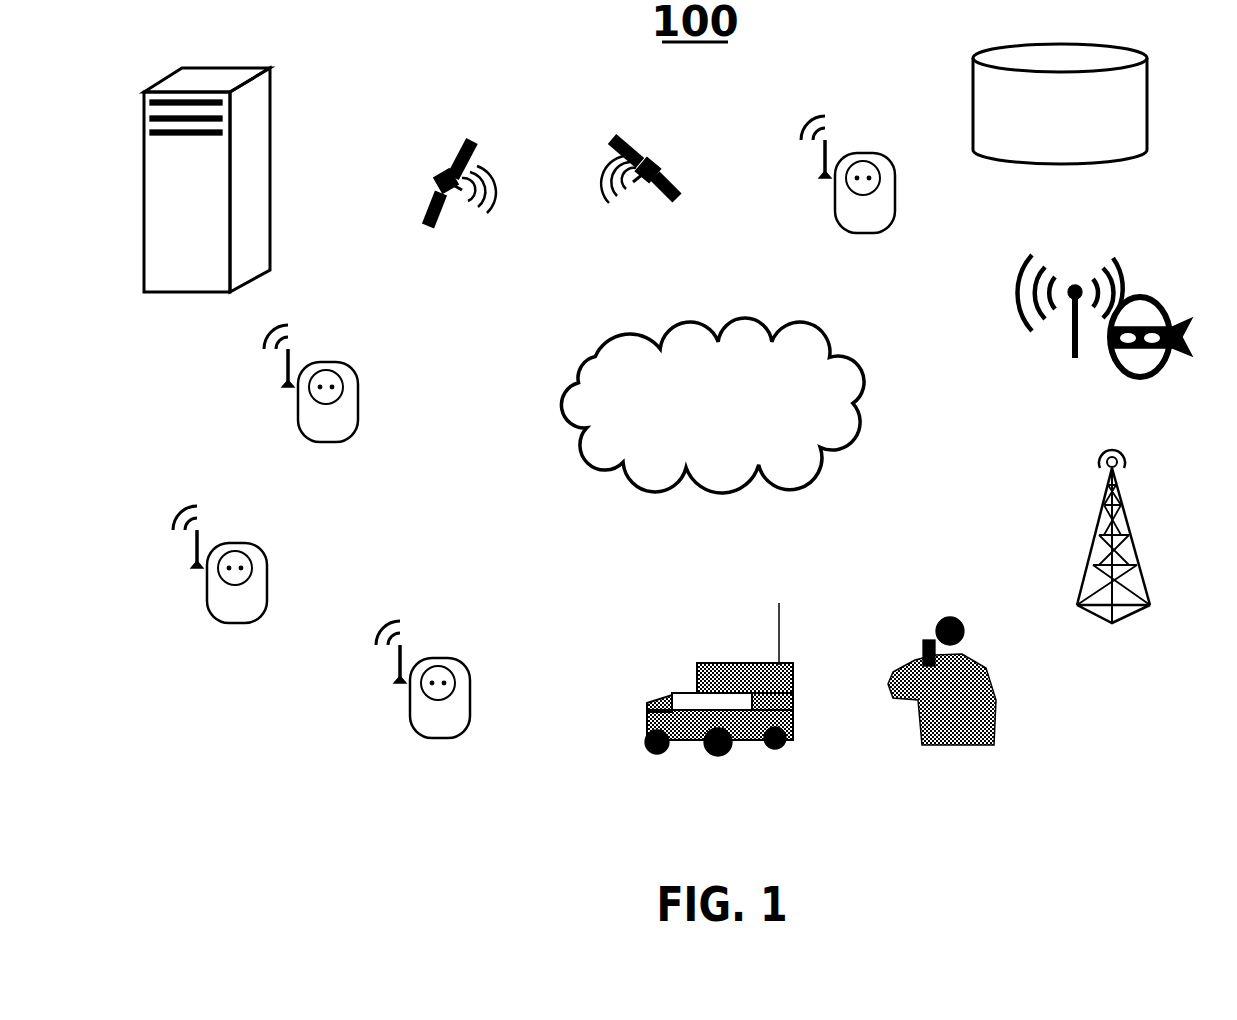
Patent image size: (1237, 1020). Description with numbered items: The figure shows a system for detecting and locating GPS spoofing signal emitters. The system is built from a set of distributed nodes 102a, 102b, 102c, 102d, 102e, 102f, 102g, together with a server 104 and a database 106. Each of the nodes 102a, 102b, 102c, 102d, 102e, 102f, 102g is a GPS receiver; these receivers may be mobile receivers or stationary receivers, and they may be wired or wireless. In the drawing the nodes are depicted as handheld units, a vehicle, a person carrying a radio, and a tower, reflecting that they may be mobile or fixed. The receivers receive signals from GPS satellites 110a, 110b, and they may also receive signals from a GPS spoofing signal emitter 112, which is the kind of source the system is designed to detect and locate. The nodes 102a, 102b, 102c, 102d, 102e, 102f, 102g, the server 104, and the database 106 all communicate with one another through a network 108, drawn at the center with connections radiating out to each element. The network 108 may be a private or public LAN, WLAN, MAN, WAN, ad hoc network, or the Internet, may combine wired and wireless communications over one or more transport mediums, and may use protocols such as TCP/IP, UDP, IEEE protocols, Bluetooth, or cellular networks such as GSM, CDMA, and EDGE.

The node 102a is at (810, 330).
The node 102b is at (563, 408).
The node 102c is at (608, 458).
The node 102d is at (632, 483).
The node 102e is at (713, 493).
The node 102f is at (820, 453).
The node 102g is at (862, 420).
The server 104 is at (590, 368).
The database 106 is at (832, 343).
The network 108 is at (777, 421).
The GPS satellite 110a is at (433, 148).
The GPS satellite 110b is at (632, 137).
The GPS spoofing signal emitter 112 is at (1046, 244).